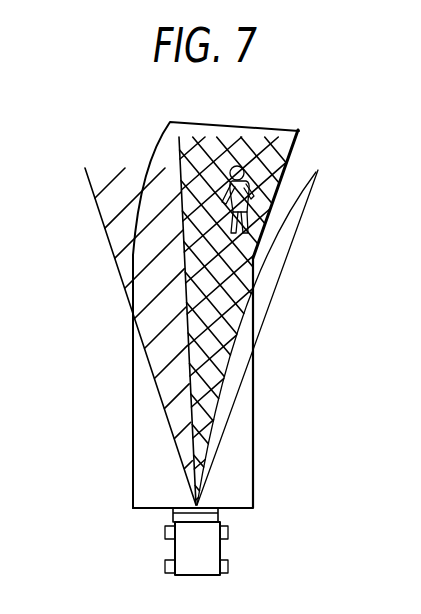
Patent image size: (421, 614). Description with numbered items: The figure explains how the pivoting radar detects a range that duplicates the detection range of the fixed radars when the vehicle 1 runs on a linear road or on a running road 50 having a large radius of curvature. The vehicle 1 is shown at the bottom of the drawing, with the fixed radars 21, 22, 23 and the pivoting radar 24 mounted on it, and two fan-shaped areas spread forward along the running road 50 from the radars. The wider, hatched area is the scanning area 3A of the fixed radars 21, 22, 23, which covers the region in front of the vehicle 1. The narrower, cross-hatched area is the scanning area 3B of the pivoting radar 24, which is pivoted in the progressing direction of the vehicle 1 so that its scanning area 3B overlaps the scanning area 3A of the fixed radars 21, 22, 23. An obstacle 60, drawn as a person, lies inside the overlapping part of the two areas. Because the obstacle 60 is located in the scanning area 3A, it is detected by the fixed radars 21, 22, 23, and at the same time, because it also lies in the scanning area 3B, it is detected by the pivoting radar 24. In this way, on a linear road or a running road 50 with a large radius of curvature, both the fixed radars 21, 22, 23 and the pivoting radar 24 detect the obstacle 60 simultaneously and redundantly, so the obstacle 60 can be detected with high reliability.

The vehicle 1 is at (173, 551).
The detection range of the fixed radars 3A is at (102, 205).
The detection range of the pivoting radar 3B is at (294, 152).
The fixed radar 21 is at (249, 523).
The fixed radar 22 is at (195, 515).
The fixed radar 23 is at (195, 515).
The pivoting radar 24 is at (220, 513).
The running road 50 is at (255, 430).
The obstacle 60 is at (247, 208).